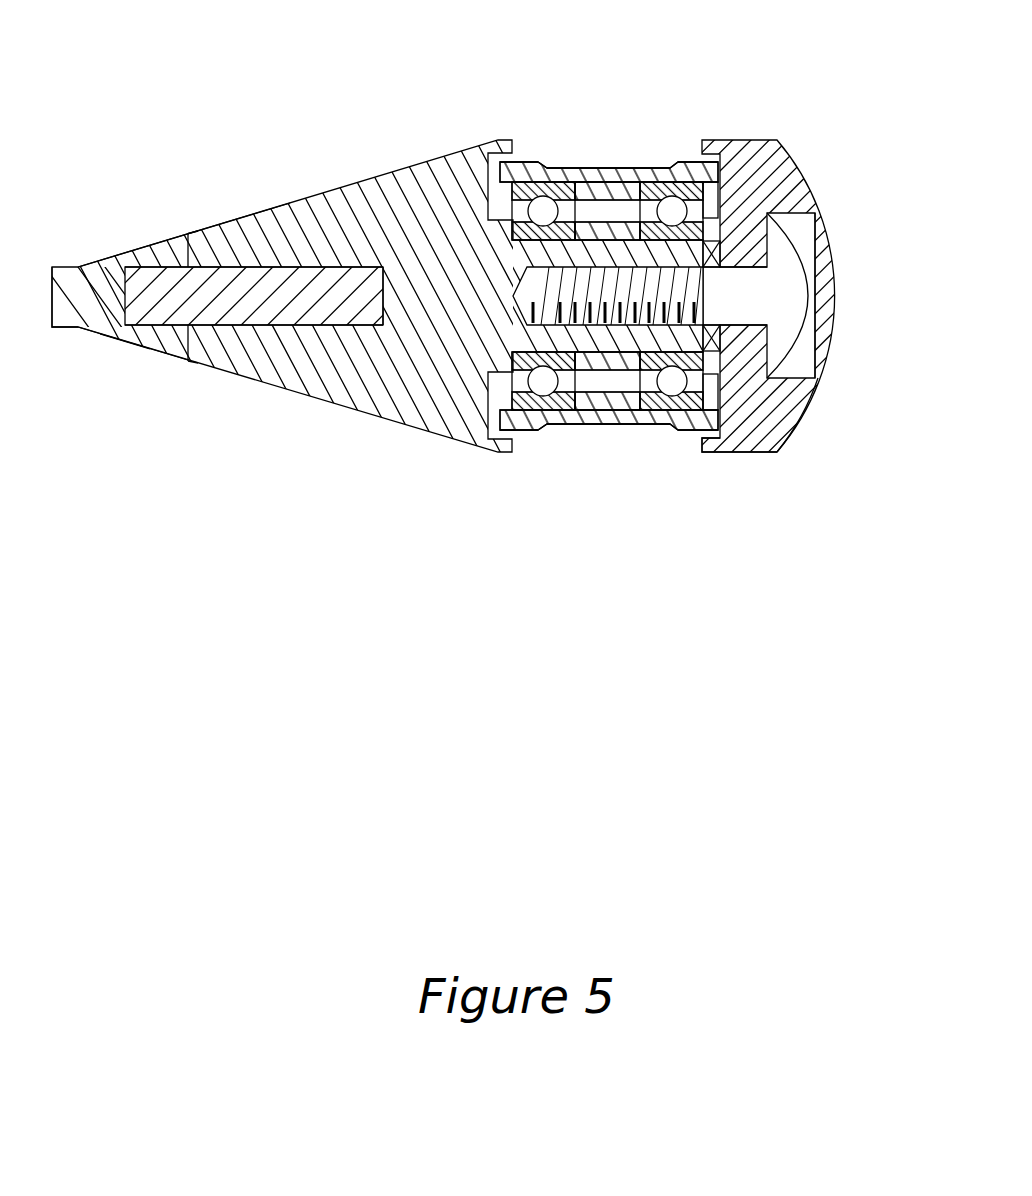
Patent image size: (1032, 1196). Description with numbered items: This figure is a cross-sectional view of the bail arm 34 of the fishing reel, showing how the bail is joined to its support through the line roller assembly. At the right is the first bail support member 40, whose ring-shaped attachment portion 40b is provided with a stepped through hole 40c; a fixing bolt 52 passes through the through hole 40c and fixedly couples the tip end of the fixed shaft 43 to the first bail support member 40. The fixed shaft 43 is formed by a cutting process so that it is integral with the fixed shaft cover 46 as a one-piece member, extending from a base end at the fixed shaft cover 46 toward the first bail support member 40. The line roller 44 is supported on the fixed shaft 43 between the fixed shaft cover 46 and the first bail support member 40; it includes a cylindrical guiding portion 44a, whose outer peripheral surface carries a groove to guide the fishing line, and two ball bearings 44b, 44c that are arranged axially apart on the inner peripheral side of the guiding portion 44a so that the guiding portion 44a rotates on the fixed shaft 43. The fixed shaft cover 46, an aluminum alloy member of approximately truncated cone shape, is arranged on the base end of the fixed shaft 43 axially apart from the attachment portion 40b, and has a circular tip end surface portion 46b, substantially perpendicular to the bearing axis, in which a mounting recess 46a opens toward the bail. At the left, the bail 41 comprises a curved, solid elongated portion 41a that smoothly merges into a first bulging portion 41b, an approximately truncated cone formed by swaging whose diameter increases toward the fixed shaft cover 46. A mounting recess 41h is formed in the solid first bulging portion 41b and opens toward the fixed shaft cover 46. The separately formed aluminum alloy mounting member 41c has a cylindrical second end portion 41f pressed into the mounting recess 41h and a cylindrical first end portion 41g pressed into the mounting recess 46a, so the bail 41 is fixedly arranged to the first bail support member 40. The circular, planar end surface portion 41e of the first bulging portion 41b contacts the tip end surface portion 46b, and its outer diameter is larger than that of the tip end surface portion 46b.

The bail arm 34 is at (703, 460).
The first bail support member 40 is at (790, 450).
The attachment portion 40b is at (808, 410).
The stepped through hole 40c is at (816, 360).
The bail 41 is at (71, 278).
The elongated portion 41a is at (60, 330).
The first bulging portion 41b is at (133, 256).
The mounting member 41c is at (307, 292).
The end surface portion 41e is at (168, 356).
The second end portion 41f is at (137, 338).
The first end portion 41g is at (338, 312).
The mounting recess 41h is at (198, 288).
The fixed shaft 43 is at (620, 336).
The line roller 44 is at (630, 162).
The cylindrical guiding portion 44a is at (607, 163).
The ball bearing 44b is at (520, 162).
The ball bearing 44c is at (683, 163).
The fixed shaft cover 46 is at (367, 192).
The mounting recess 46a is at (272, 312).
The tip end surface portion 46b is at (195, 340).
The fixing bolt 52 is at (776, 247).